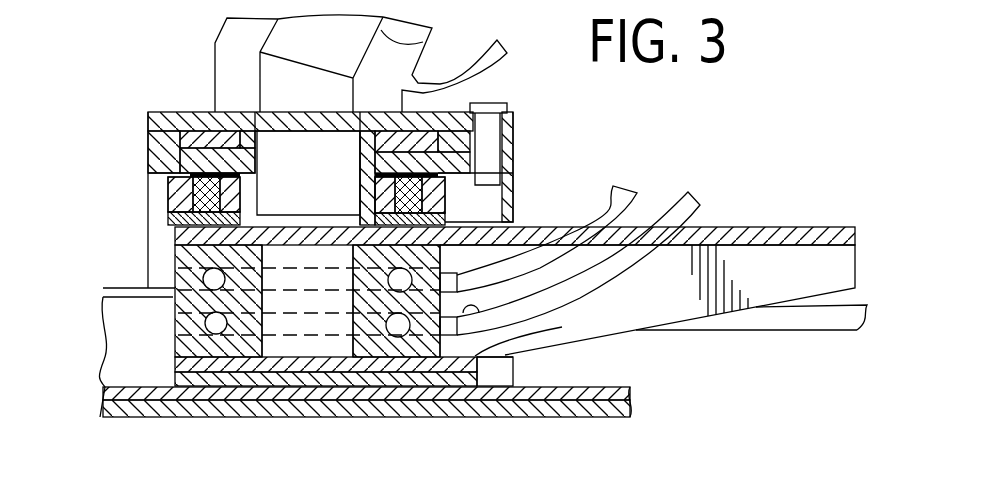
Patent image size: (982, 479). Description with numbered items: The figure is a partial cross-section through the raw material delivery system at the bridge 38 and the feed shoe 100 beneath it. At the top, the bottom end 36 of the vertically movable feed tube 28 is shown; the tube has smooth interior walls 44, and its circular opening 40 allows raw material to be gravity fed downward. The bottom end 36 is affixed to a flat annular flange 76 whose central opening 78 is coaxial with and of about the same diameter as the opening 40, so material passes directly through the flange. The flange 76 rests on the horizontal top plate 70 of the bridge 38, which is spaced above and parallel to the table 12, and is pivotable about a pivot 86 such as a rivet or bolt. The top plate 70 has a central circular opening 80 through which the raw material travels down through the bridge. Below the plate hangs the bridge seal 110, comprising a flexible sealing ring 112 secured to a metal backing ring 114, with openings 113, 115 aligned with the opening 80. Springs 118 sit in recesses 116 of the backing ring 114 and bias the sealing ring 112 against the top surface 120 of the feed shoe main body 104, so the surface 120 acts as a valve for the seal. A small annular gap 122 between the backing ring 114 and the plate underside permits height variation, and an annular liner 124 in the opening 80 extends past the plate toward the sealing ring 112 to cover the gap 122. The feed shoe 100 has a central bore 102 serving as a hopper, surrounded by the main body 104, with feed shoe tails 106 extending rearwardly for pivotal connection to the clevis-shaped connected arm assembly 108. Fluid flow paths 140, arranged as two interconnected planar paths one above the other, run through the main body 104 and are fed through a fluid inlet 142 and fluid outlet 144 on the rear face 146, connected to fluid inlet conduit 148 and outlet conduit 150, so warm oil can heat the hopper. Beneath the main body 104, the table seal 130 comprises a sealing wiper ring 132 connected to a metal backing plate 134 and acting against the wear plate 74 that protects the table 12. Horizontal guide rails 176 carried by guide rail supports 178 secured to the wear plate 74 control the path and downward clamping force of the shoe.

The table 12 is at (348, 403).
The vertically movable feed tube 28 is at (216, 40).
The bottom end 36 is at (247, 110).
The bridge 38 is at (515, 165).
The circular opening 40 is at (280, 112).
The interior walls 44 is at (425, 38).
The horizontal top plate 70 is at (148, 133).
The wear plate 74 is at (317, 392).
The flat annular flange 76 is at (172, 118).
The central opening 78 is at (338, 117).
The central circular opening 80 is at (322, 156).
The pivot 86 is at (507, 103).
The feed shoe 100 is at (747, 266).
The central bore 102 is at (285, 343).
The main body 104 is at (183, 286).
The feed shoe tails 106 is at (657, 310).
The connected arm assembly 108 is at (762, 317).
The bridge seal 110 is at (167, 197).
The flexible sealing ring 112 is at (470, 222).
The opening 113 is at (302, 170).
The metal backing ring 114 is at (435, 200).
The opening 115 is at (362, 213).
The recesses 116 is at (168, 212).
The springs 118 is at (170, 180).
The top surface 120 is at (690, 227).
The annular gap 122 is at (360, 172).
The annular liner 124 is at (258, 222).
The table seal 130 is at (479, 366).
The sealing wiper ring 132 is at (468, 383).
The metal backing plate 134 is at (540, 336).
The fluid flow paths 140 is at (205, 272).
The fluid inlet 142 is at (473, 253).
The fluid outlet 144 is at (275, 327).
The rear face 146 is at (468, 297).
The fluid inlet conduit 148 is at (550, 262).
The fluid outlet conduit 150 is at (598, 279).
The horizontal guide rails 176 is at (103, 298).
The guide rail supports 178 is at (142, 359).